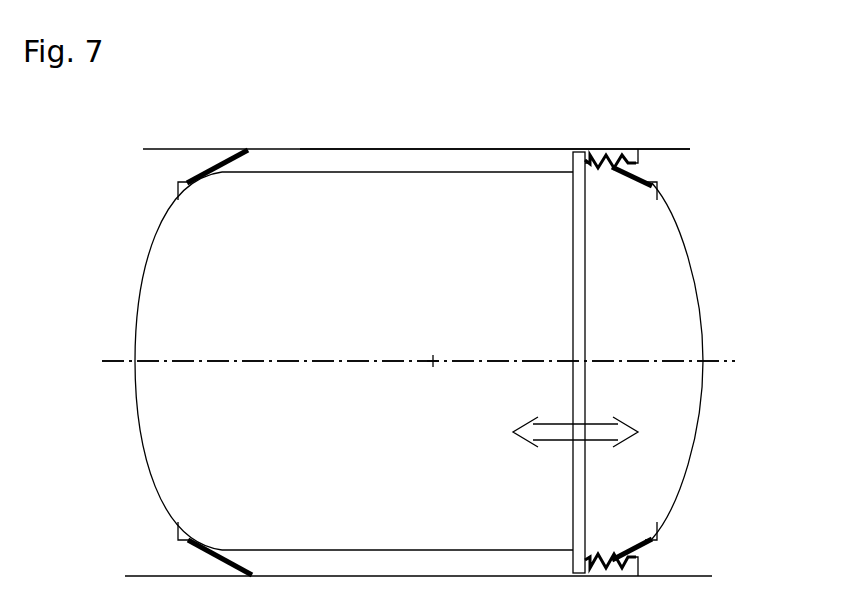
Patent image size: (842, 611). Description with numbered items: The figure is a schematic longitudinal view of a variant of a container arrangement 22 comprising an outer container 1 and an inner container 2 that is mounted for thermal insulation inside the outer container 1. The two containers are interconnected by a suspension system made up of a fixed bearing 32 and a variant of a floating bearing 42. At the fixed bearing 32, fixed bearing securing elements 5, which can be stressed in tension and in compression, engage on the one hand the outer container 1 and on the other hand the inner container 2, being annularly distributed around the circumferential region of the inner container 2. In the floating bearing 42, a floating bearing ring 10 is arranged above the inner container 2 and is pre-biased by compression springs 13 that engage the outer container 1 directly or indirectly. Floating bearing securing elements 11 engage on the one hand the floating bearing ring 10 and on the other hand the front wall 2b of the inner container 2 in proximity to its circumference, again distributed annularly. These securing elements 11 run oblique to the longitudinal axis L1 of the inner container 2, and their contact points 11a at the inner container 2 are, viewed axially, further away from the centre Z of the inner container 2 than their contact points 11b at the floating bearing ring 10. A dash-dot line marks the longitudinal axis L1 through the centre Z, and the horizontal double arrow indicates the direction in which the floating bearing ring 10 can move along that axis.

The outer container 1 is at (327, 148).
The inner container 2 is at (324, 173).
The front wall 2b is at (702, 329).
The fixed bearing securing elements 5 is at (222, 556).
The floating bearing ring 10 is at (586, 325).
The floating bearing securing elements 11 is at (632, 182).
The contact points 11a is at (665, 537).
The contact points 11b is at (572, 558).
The compression springs 13 is at (618, 152).
The container arrangement 22 is at (465, 128).
The fixed bearing 32 is at (240, 128).
The floating bearing 42 is at (615, 130).
The centre Z is at (443, 344).
The longitudinal axis L1 is at (273, 339).